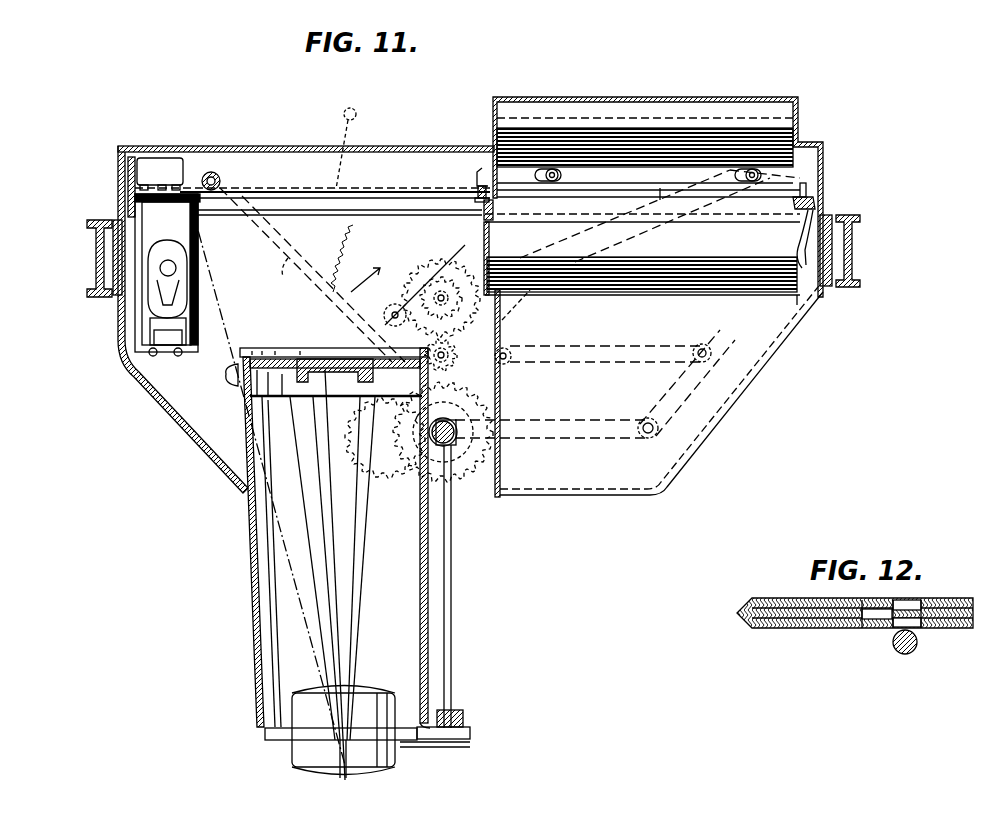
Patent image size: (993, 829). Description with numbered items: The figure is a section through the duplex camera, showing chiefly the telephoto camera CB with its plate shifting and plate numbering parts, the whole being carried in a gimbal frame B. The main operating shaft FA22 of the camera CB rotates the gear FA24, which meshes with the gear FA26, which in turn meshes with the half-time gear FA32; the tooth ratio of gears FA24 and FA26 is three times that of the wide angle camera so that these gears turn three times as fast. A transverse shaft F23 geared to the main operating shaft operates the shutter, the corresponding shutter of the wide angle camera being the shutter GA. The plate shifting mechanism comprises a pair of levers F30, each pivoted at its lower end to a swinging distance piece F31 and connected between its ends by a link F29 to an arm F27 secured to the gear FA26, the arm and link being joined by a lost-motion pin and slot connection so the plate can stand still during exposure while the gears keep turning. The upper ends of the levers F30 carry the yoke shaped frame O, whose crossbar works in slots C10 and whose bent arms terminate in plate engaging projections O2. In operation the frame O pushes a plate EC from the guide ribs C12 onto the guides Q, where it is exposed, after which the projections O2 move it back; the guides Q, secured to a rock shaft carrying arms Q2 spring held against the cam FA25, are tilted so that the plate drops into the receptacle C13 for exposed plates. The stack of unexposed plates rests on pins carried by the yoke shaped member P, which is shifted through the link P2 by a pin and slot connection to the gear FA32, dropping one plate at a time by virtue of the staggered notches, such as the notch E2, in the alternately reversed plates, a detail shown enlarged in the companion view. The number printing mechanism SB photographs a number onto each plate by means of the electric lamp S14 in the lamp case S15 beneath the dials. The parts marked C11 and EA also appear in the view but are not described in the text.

In FIG. 11, the number printing mechanism SB is at (155, 165).
In FIG. 11, the guides Q is at (300, 191).
In FIG. 11, the arms Q2 is at (299, 476).
In FIG. 11, the slots C10 is at (313, 214).
In FIG. 11, the slot C11 is at (540, 168).
In FIG. 11, the guide ribs C12 is at (662, 200).
In FIG. 11, the receptacle for exposed plates C13 is at (487, 240).
In FIG. 11, the plate EC is at (666, 140).
In FIG. 12, the plate EC is at (738, 612).
In FIG. 11, the electrode plate EA is at (627, 182).
In FIG. 11, the yoke shaped member P is at (480, 168).
In FIG. 11, the links P2 is at (560, 243).
In FIG. 11, the yoke shaped frame O is at (814, 205).
In FIG. 11, the plate engaging projections O2 is at (480, 192).
In FIG. 11, the gimbal frame B is at (87, 258).
In FIG. 11, the electric lamp S14 is at (178, 282).
In FIG. 11, the lamp case S15 is at (188, 274).
In FIG. 11, the gear FA32 is at (415, 290).
In FIG. 11, the gear FA26 is at (470, 348).
In FIG. 11, the cam FA25 is at (475, 382).
In FIG. 11, the gear FA24 is at (393, 446).
In FIG. 11, the main operating shaft FA22 is at (420, 448).
In FIG. 11, the transverse shaft F23 is at (452, 570).
In FIG. 11, the arm F27 is at (503, 312).
In FIG. 11, the link F29 is at (592, 364).
In FIG. 11, the levers F30 is at (712, 325).
In FIG. 11, the swinging distance piece F31 is at (575, 440).
In FIG. 11, the camera CB is at (765, 385).
In FIG. 11, the shutter GA is at (395, 752).
In FIG. 12, the notches E2 is at (878, 628).